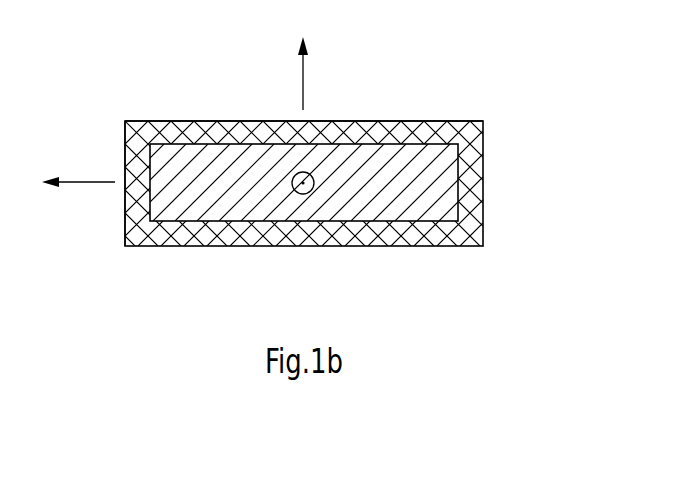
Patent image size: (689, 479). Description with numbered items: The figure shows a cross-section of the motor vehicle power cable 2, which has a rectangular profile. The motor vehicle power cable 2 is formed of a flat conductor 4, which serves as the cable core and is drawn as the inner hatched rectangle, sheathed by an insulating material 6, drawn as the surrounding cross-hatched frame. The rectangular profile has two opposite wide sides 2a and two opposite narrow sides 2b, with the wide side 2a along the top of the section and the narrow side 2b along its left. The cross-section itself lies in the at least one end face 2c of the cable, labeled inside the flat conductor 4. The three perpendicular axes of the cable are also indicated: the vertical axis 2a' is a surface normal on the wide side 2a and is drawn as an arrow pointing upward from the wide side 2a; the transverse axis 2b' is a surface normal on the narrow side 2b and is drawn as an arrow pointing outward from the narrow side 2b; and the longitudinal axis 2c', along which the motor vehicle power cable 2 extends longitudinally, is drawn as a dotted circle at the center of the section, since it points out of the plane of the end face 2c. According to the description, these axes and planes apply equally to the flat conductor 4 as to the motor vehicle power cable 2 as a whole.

The motor vehicle power cable 2 is at (476, 65).
The wide side 2a is at (304, 98).
The vertical axis 2a' is at (275, 73).
The narrow side 2b is at (97, 183).
The transverse axis 2b' is at (78, 162).
The end face 2c is at (223, 182).
The longitudinal axis 2c' is at (330, 234).
The flat conductor 4 is at (397, 196).
The insulating material 6 is at (174, 239).